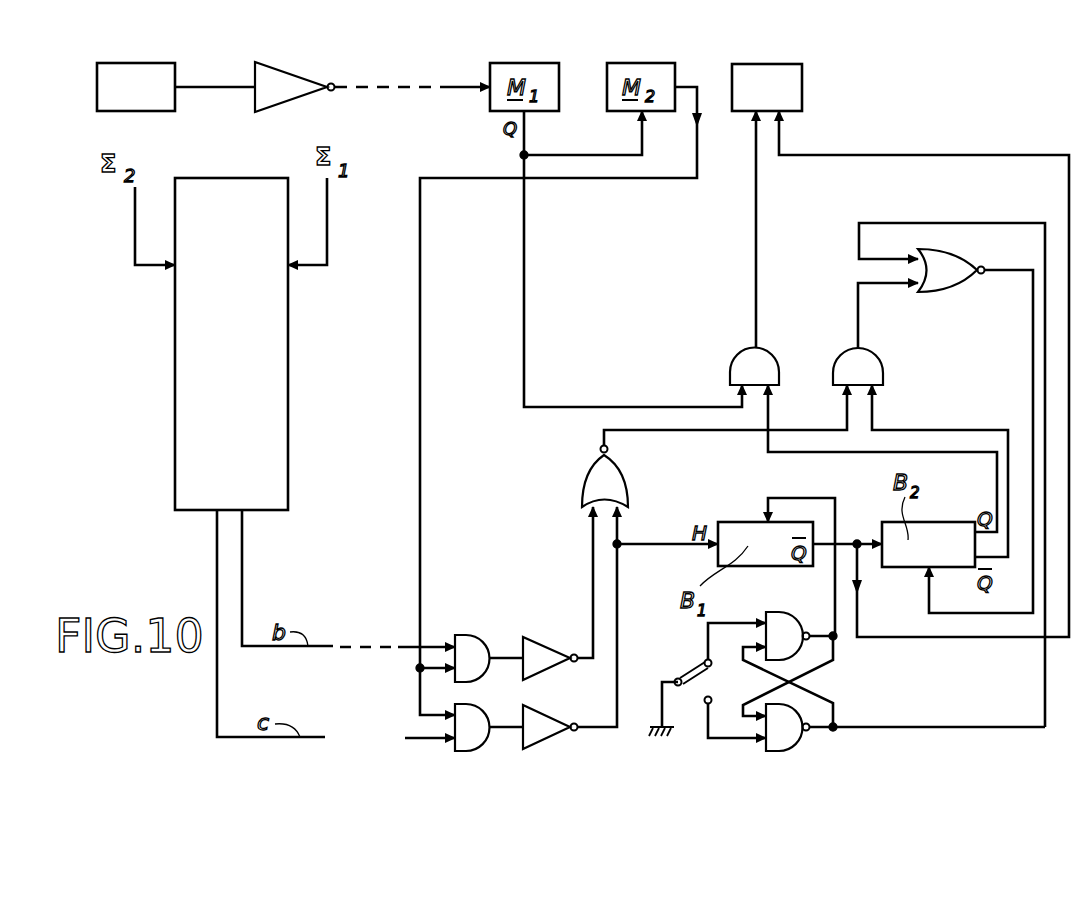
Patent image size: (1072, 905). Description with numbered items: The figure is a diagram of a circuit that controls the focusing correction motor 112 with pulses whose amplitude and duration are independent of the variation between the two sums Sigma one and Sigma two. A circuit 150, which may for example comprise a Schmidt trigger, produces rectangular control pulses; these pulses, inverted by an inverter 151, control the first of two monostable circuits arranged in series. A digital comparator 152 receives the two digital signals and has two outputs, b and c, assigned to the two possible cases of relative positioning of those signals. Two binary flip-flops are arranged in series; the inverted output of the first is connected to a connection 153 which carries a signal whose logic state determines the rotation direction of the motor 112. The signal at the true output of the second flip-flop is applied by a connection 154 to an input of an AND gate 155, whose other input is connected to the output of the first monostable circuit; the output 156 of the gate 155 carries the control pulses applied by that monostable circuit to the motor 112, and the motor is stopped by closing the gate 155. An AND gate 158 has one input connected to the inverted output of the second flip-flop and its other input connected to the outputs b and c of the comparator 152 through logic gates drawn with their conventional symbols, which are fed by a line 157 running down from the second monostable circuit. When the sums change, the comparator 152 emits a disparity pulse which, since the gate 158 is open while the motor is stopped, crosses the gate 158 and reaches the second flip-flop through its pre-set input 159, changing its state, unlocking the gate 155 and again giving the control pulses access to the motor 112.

The circuit producing rectangular control pulses 150 is at (136, 87).
The inverter 151 is at (304, 90).
The digital comparator 152 is at (231, 344).
The focusing correction motor 112 is at (785, 83).
The connection 153 is at (957, 155).
The connection 154 is at (768, 446).
The AND gate 155 is at (752, 368).
The output of gate 155 156 is at (754, 241).
The line 157 is at (420, 490).
The AND gate 158 is at (866, 368).
The pre-set input 159 is at (925, 586).